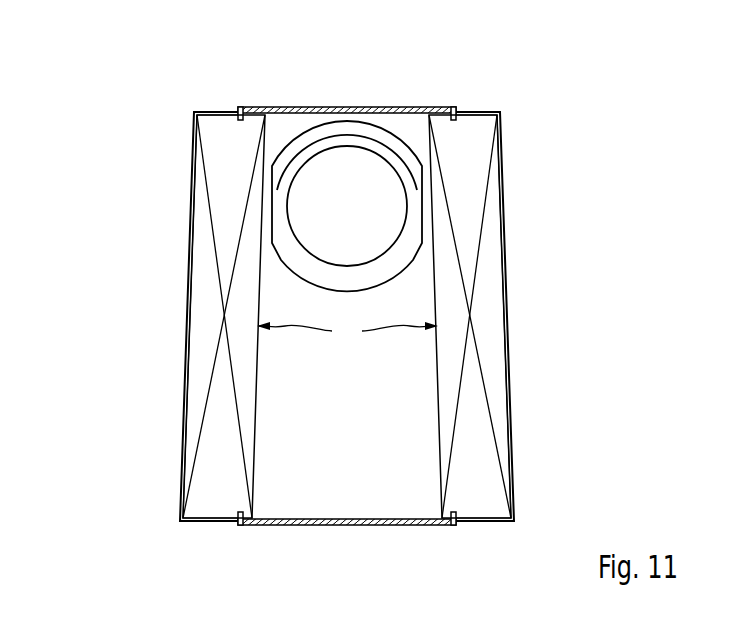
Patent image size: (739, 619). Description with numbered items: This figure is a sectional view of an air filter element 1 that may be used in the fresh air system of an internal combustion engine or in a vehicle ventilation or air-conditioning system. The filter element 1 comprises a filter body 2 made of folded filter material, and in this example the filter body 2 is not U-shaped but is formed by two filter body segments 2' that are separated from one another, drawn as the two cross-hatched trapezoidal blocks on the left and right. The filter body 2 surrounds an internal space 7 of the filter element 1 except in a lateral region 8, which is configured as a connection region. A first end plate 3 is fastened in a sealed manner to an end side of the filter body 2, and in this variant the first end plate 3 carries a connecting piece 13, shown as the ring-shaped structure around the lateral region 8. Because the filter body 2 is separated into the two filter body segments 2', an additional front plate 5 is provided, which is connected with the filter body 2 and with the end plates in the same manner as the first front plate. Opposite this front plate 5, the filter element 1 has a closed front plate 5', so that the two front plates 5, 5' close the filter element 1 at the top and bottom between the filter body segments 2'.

The air filter element 1 is at (140, 135).
The filter body 2 is at (347, 334).
The filter body segments 2' is at (351, 316).
The first end plate 3 is at (504, 252).
The front plate 5 is at (347, 79).
The closed front plate 5' is at (347, 555).
The internal space 7 is at (352, 417).
The lateral region 8 is at (352, 220).
The connecting piece 13 is at (381, 150).